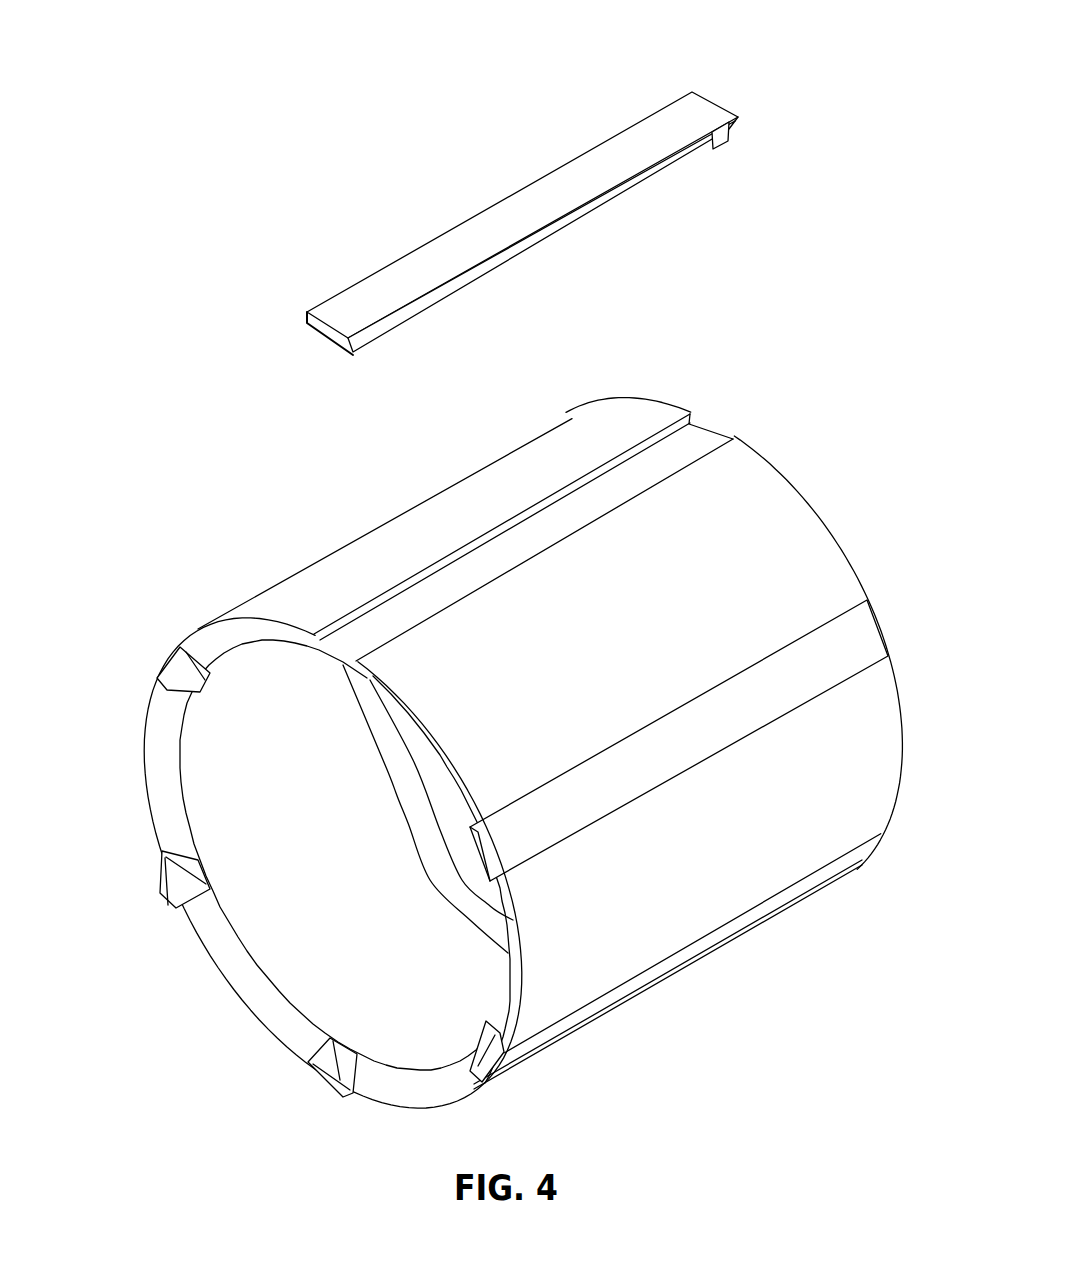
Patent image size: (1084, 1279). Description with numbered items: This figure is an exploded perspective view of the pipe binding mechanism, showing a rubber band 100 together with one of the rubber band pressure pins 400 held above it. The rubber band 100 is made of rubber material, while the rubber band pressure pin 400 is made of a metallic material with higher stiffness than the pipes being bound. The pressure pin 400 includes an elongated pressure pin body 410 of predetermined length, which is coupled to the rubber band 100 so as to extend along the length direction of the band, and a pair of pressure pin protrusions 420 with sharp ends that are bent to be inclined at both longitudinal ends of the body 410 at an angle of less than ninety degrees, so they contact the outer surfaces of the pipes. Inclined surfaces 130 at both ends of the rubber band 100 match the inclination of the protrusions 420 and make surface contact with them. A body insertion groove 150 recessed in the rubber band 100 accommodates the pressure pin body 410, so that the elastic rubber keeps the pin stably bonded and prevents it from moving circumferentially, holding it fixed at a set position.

The rubber band 100 is at (498, 701).
The inclined surfaces 130 is at (215, 640).
The body insertion groove 150 is at (618, 478).
The rubber band pressure pin 400 is at (566, 186).
The pressure pin body 410 is at (462, 242).
The pressure pin protrusions 420 is at (729, 135).